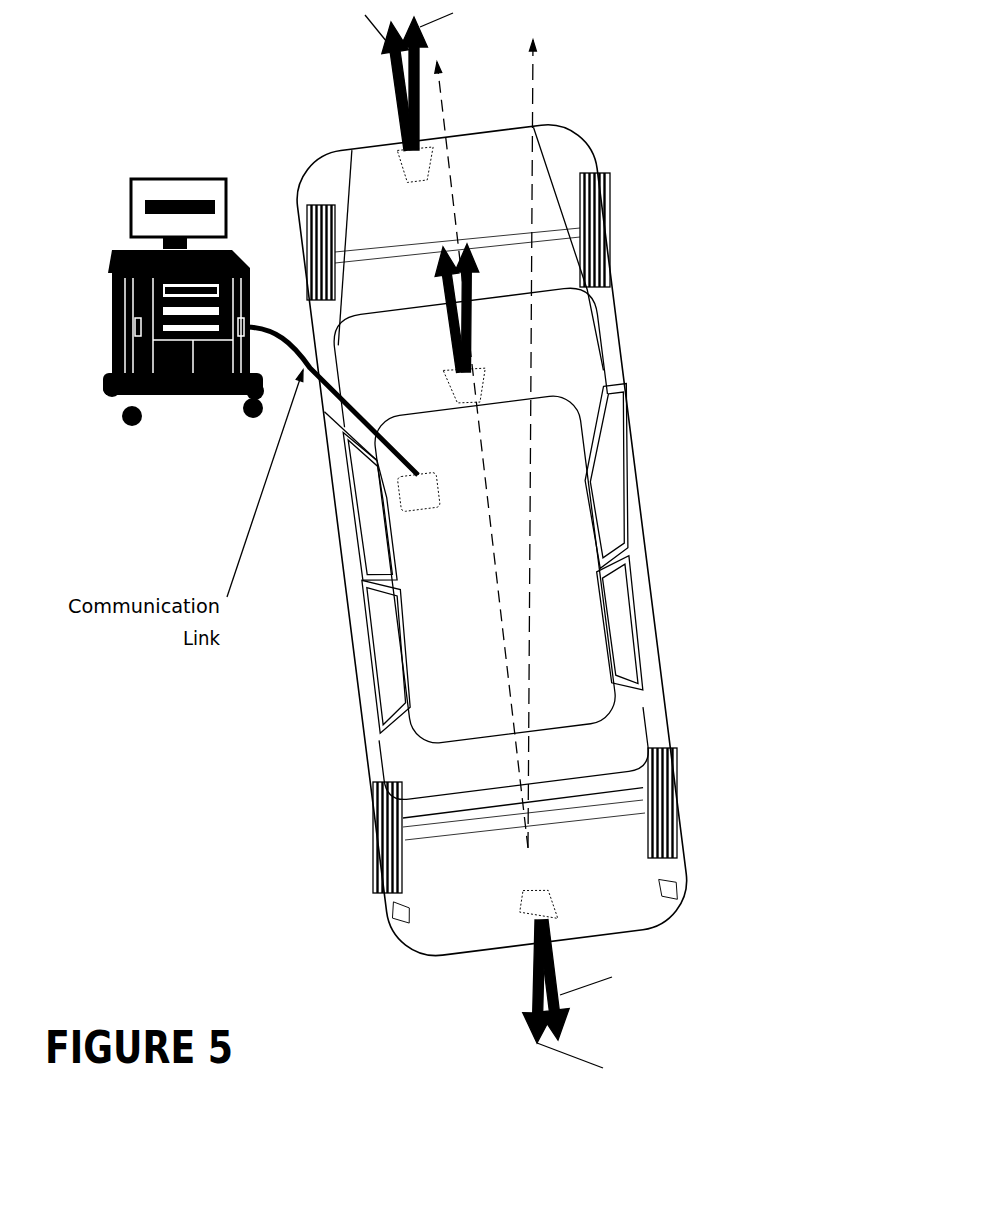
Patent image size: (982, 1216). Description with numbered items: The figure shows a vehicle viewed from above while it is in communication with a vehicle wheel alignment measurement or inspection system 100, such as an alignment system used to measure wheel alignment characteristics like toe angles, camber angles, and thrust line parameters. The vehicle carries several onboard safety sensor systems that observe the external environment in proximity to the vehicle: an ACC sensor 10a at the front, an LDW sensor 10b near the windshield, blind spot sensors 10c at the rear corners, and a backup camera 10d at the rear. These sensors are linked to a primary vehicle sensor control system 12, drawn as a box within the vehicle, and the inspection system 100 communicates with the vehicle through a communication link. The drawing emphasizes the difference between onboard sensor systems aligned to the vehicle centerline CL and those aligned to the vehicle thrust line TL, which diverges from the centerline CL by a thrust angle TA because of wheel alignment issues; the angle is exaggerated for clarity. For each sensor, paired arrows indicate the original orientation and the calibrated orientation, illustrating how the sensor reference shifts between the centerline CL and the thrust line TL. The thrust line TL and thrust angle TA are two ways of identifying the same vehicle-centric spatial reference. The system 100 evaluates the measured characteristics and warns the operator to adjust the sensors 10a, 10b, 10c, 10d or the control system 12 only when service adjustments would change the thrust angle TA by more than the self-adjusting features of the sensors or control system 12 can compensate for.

The onboard sensor system 10a is at (400, 165).
The onboard sensor system 10b is at (465, 387).
The onboard sensor system 10c is at (407, 913).
The onboard sensor system 10d is at (522, 913).
The primary vehicle sensor control system 12 is at (412, 492).
The vehicle alignment system 100 is at (180, 407).
The thrust angle TA is at (644, 476).
The centerline CL is at (500, 603).
The thrust line TL is at (527, 695).